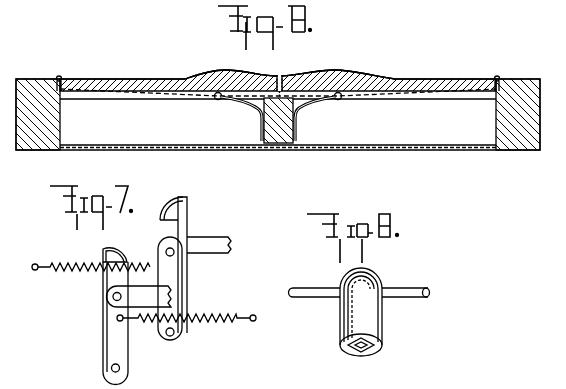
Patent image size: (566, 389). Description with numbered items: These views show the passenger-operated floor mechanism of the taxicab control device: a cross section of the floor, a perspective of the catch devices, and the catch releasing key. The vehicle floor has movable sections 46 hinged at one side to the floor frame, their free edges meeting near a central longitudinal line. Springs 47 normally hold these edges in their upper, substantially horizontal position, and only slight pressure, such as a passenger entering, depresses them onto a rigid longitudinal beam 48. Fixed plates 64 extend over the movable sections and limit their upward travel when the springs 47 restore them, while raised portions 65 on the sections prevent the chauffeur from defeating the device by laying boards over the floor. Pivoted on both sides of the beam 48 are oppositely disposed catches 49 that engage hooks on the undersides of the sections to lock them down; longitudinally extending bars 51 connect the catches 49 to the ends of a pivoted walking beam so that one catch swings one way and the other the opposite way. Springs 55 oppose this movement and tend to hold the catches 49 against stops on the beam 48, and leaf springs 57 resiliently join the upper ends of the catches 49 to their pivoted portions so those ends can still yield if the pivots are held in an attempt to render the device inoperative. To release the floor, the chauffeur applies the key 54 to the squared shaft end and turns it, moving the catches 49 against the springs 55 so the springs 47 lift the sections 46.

In FIG. 6, the movable floor section 46 is at (128, 82).
In FIG. 6, the spring 47 is at (229, 103).
In FIG. 6, the rigid longitudinal beam 48 is at (276, 144).
In FIG. 7, the catch 49 is at (113, 345).
In FIG. 7, the longitudinally extending bar 51 is at (143, 293).
In FIG. 8, the key 54 is at (364, 320).
In FIG. 7, the spring 55 is at (58, 263).
In FIG. 7, the leaf spring 57 is at (108, 278).
In FIG. 6, the plate 64 is at (280, 73).
In FIG. 6, the raised portion 65 is at (225, 70).